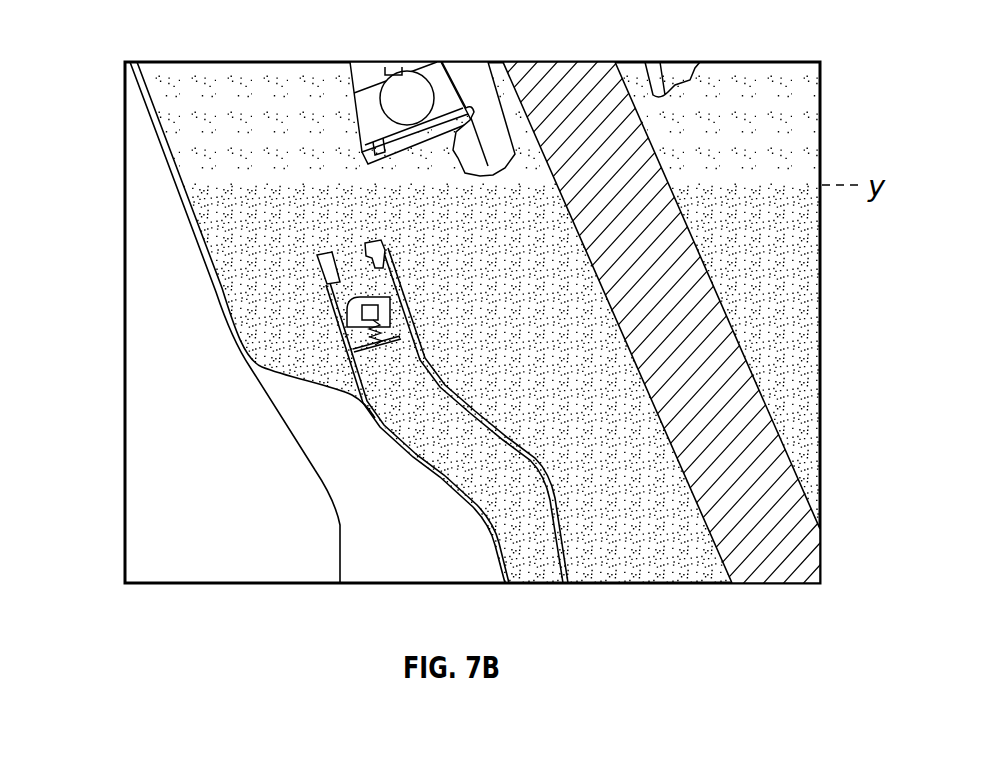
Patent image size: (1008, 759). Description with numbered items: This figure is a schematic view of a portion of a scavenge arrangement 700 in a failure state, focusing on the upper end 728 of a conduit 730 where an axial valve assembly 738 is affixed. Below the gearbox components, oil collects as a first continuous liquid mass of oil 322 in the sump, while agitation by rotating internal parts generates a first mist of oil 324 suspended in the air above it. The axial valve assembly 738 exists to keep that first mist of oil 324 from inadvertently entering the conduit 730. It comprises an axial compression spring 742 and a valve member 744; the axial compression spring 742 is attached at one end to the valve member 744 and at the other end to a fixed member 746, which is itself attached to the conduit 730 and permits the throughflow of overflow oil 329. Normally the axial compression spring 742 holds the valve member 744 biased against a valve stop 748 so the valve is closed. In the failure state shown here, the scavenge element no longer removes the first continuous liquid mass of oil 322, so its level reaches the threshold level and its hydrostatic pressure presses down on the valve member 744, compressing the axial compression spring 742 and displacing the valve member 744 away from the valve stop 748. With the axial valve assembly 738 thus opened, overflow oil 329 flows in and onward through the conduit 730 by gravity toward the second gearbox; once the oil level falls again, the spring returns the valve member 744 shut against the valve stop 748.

The scavenge arrangement 700 is at (123, 36).
The first continuous liquid mass of oil 322 is at (803, 373).
The first mist of oil 324 is at (752, 78).
The overflow oil 329 is at (550, 570).
The upper end 728 is at (308, 282).
The conduit 730 is at (490, 532).
The axial valve assembly 738 is at (343, 251).
The axial compression spring 742 is at (360, 338).
The valve member 744 is at (349, 312).
The fixed member 746 is at (397, 342).
The valve stop 748 is at (381, 241).